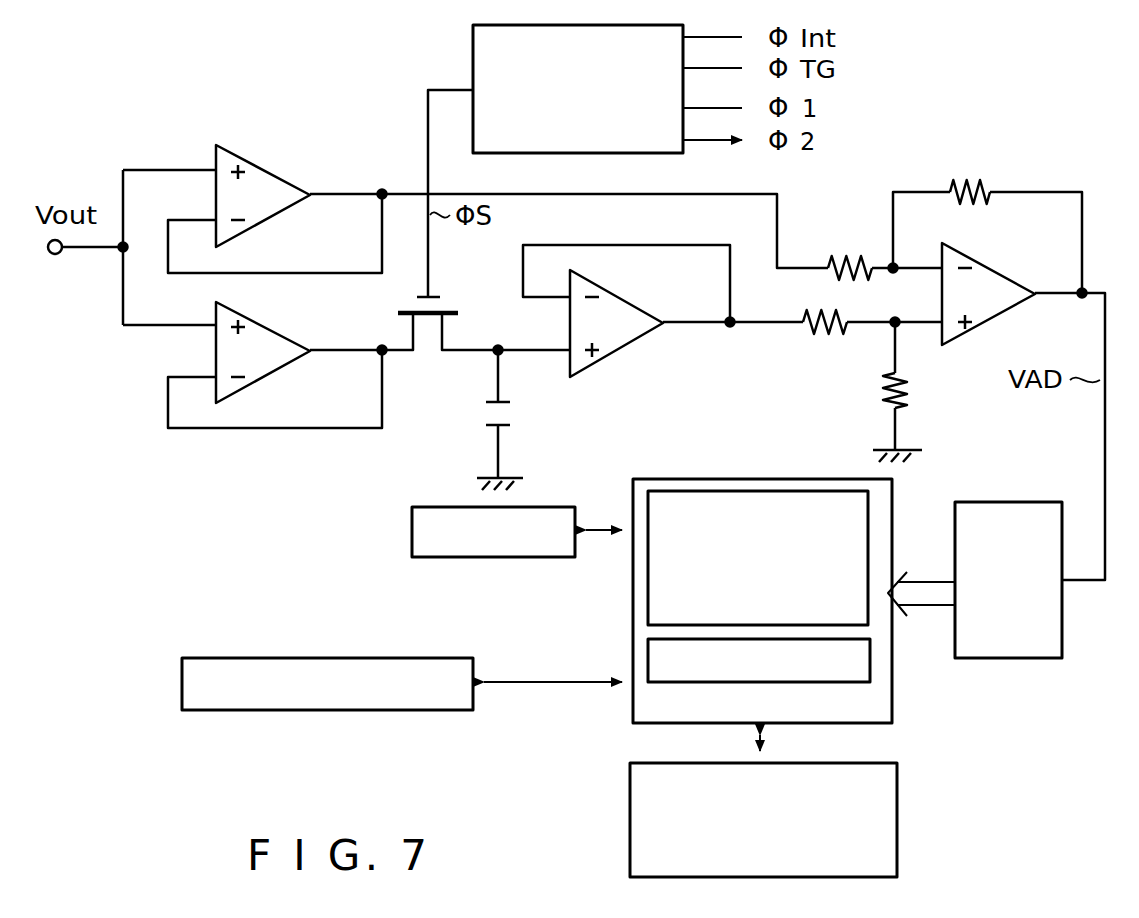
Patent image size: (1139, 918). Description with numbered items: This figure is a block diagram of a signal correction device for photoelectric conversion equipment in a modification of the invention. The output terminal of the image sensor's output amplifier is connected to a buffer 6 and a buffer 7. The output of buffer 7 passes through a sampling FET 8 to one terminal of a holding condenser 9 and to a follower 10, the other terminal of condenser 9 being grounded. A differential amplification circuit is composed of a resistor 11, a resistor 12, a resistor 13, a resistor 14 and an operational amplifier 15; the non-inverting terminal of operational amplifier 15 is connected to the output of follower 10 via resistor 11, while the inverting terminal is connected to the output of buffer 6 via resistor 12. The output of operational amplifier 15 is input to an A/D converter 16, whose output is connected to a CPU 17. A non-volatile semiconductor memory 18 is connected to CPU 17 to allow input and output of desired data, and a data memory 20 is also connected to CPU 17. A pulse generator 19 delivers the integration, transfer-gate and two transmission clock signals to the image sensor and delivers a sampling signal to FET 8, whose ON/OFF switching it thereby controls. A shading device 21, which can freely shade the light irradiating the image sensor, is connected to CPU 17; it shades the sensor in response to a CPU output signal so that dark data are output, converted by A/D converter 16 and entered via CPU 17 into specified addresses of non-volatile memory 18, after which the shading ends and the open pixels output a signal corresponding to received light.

The buffer 6 is at (272, 172).
The buffer 7 is at (270, 325).
The sampling FET 8 is at (418, 305).
The holding condenser 9 is at (487, 408).
The follower 10 is at (630, 298).
The resistor 11 is at (822, 330).
The resistor 12 is at (852, 253).
The resistor 13 is at (883, 400).
The resistor 14 is at (977, 175).
The operational amplifier 15 is at (997, 272).
The A/D converter 16 is at (1033, 502).
The CPU 17 is at (708, 478).
The non-volatile semiconductor memory 18 is at (900, 778).
The pulse generator 19 is at (473, 40).
The data memory 20 is at (557, 500).
The shading device 21 is at (410, 658).